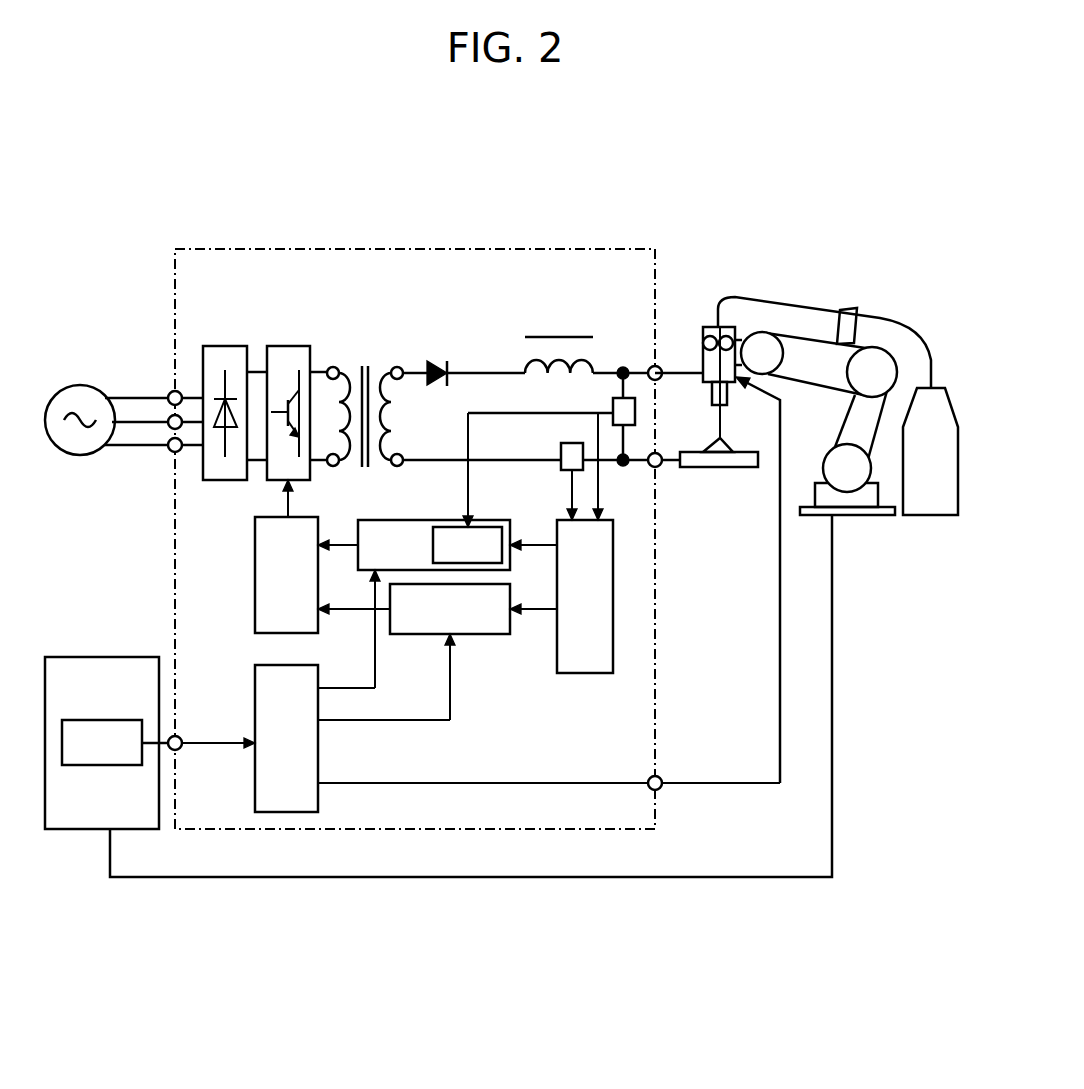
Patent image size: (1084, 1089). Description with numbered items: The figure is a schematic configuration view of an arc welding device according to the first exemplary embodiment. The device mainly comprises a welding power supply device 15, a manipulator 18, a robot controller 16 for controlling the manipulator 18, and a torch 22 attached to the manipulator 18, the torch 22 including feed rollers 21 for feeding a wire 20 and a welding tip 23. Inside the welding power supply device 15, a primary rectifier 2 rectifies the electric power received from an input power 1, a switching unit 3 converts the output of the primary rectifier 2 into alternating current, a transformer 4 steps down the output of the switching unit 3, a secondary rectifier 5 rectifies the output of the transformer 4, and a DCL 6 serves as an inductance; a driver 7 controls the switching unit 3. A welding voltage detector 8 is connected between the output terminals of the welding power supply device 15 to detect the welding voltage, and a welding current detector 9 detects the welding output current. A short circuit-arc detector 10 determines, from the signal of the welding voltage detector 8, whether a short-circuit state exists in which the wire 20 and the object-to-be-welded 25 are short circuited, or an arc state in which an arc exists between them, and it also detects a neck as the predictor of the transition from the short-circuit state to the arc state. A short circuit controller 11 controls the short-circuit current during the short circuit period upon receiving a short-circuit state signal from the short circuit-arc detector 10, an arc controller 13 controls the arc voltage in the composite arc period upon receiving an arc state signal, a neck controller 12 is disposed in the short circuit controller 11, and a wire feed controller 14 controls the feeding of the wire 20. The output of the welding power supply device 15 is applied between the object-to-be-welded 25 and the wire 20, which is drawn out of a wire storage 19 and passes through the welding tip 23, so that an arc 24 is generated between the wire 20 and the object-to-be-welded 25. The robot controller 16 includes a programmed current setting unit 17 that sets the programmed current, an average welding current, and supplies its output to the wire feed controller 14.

The input power 1 is at (78, 386).
The primary rectifier 2 is at (223, 346).
The switching unit 3 is at (283, 346).
The transformer 4 is at (364, 366).
The secondary rectifier 5 is at (440, 360).
The DCL 6 is at (557, 334).
The driver 7 is at (286, 575).
The welding voltage detector 8 is at (613, 405).
The welding current detector 9 is at (560, 452).
The short circuit-arc detector 10 is at (585, 596).
The short circuit controller 11 is at (437, 604).
The neck controller 12 is at (467, 488).
The arc controller 13 is at (437, 652).
The wire feed controller 14 is at (481, 738).
The welding power supply device 15 is at (215, 248).
The robot controller 16 is at (77, 656).
The programmed current setting unit 17 is at (115, 742).
The manipulator 18 is at (858, 490).
The wire storage 19 is at (929, 516).
The wire 20 is at (752, 292).
The feed rollers 21 is at (717, 338).
The torch 22 is at (705, 345).
The welding tip 23 is at (713, 390).
The arc 24 is at (707, 447).
The object-to-be-welded 25 is at (727, 468).